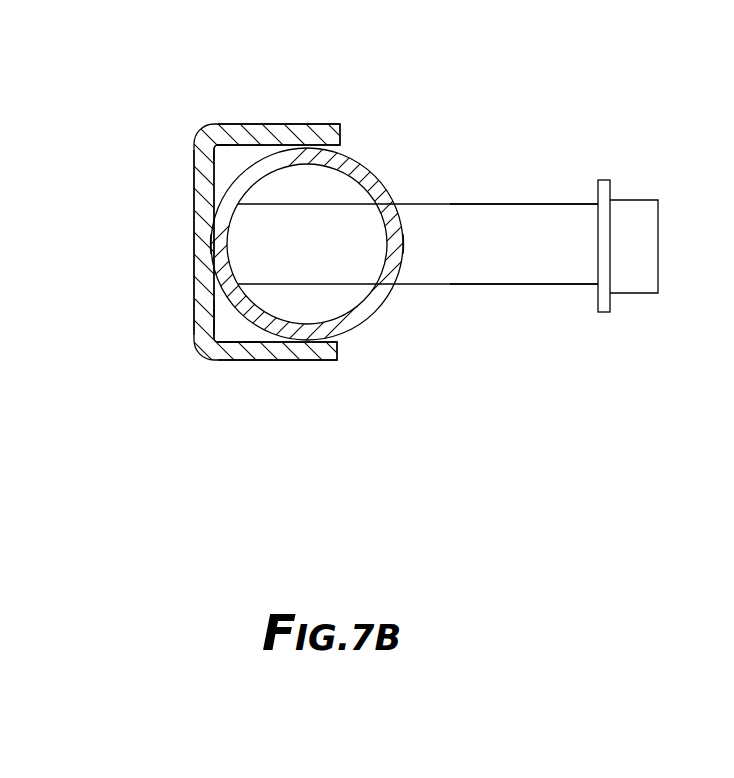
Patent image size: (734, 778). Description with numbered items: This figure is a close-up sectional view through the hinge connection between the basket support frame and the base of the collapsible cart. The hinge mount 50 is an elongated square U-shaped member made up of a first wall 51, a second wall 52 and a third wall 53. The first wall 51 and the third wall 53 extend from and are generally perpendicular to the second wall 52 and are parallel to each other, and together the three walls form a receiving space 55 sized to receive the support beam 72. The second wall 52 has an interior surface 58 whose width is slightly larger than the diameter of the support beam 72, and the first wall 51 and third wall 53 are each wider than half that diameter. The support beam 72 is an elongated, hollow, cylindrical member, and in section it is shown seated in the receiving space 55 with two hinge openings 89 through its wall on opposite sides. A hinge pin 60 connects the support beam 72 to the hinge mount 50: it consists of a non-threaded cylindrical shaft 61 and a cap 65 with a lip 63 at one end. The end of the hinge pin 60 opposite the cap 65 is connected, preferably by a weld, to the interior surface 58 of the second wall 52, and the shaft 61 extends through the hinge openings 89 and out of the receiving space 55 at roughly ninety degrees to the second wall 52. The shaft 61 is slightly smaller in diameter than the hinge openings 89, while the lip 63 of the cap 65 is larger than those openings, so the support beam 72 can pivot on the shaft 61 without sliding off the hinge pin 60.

The hinge mount 50 is at (197, 327).
The first wall 51 is at (293, 350).
The second wall 52 is at (203, 270).
The third wall 53 is at (262, 132).
The receiving space 55 is at (225, 328).
The interior surface 58 is at (217, 172).
The hinge pin 60 is at (493, 204).
The shaft 61 is at (527, 262).
The lip 63 is at (608, 180).
The cap 65 is at (640, 277).
The support beam 72 is at (377, 183).
The hinge opening 89 is at (230, 235).